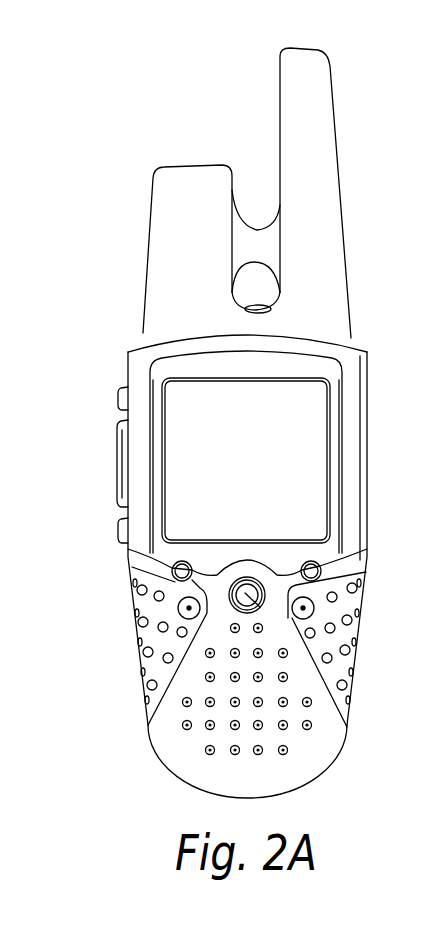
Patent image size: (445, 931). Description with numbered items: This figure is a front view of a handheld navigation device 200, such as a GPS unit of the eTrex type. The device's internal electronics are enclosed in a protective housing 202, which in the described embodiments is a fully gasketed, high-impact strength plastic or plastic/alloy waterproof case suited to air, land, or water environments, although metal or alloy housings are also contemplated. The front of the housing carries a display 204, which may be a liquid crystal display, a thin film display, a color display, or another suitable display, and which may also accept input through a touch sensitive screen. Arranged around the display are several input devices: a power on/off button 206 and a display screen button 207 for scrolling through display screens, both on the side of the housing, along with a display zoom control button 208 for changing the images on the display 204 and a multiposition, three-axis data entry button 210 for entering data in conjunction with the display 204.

The navigation device 200 is at (110, 93).
The protective housing 202 is at (340, 750).
The display 204 is at (312, 413).
The power on/off button 206 is at (118, 527).
The display screen button 207 is at (117, 468).
The display zoom control button 208 is at (322, 563).
The multiposition data entry button 210 is at (258, 604).